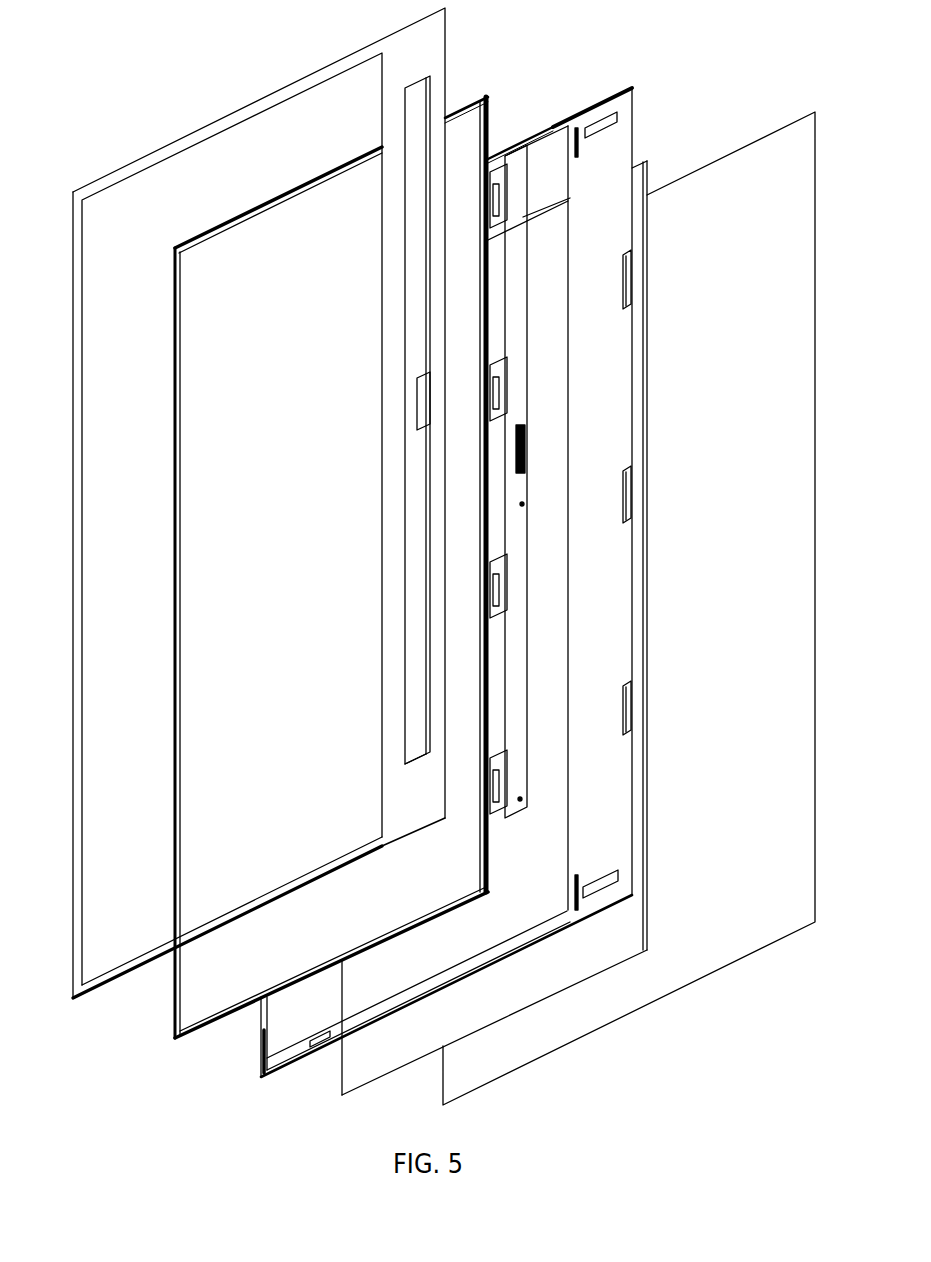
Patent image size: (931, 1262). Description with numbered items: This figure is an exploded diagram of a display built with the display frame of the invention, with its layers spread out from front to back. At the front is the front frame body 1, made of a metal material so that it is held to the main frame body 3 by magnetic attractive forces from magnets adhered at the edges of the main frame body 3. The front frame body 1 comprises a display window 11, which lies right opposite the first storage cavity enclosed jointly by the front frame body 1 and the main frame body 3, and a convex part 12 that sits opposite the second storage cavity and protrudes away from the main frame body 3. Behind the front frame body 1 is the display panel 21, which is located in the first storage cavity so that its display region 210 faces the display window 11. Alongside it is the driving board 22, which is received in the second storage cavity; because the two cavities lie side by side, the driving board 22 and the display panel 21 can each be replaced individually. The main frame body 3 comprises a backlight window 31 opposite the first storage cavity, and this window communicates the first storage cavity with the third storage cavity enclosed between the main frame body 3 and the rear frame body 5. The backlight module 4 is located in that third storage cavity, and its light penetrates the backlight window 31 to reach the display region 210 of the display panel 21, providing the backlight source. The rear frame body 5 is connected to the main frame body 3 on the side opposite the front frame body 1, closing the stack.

The front frame body 1 is at (257, 105).
The display window 11 is at (207, 182).
The convex part 12 is at (417, 123).
The display panel 21 is at (463, 130).
The display region 210 is at (203, 985).
The driving board 22 is at (516, 176).
The main frame body 3 is at (610, 108).
The backlight window 31 is at (556, 129).
The backlight module 4 is at (370, 1061).
The rear frame body 5 is at (747, 194).